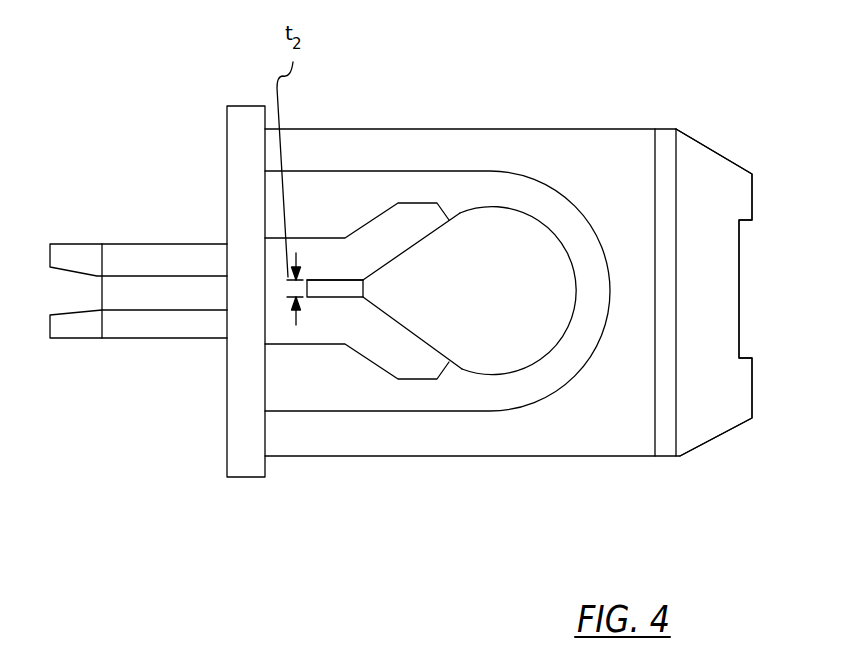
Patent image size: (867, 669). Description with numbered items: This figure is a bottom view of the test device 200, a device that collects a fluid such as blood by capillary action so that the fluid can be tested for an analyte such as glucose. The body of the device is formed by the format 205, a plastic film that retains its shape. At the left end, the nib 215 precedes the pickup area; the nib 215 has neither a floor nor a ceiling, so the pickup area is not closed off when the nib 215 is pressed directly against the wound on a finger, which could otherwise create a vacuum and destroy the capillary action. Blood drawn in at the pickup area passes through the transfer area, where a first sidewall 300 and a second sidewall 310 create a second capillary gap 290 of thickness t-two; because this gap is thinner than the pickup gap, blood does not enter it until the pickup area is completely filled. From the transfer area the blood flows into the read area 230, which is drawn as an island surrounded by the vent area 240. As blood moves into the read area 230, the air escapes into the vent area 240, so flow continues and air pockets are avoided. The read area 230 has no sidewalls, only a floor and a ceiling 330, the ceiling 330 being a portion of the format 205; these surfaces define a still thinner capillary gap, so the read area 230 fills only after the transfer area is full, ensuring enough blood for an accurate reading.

The test device 200 is at (760, 130).
The format 205 is at (716, 426).
The nib 215 is at (72, 257).
The read area 230 is at (473, 332).
The vent area 240 is at (560, 363).
The second capillary gap 290 is at (332, 277).
The first sidewall 300 is at (353, 297).
The second sidewall 310 is at (361, 279).
The ceiling 330 is at (503, 227).